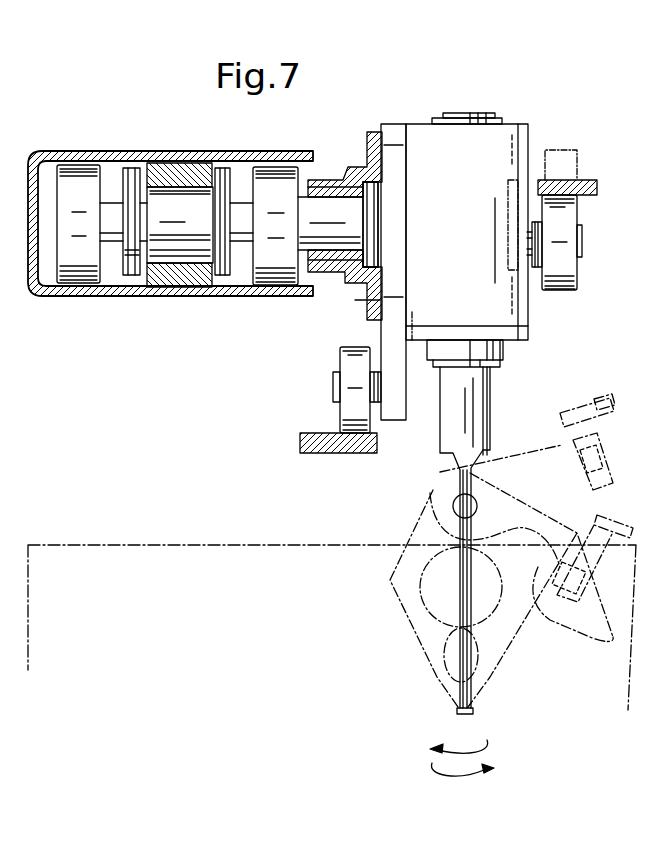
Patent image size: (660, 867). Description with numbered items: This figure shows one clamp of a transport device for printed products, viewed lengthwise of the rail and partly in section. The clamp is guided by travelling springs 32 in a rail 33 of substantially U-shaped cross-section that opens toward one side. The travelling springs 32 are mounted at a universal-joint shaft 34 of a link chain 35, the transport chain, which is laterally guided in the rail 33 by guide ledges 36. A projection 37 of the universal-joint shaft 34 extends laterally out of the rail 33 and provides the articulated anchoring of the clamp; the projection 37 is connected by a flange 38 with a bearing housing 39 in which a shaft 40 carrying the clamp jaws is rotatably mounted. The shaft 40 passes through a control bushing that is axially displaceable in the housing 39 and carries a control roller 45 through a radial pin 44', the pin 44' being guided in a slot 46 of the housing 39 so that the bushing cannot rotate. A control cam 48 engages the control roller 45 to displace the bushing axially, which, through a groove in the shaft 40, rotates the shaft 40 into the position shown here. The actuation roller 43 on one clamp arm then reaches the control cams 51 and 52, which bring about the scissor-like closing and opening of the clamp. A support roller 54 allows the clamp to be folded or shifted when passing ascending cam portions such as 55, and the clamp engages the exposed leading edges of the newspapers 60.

The travelling springs 32 is at (82, 173).
The rail 33 is at (43, 151).
The universal-joint shaft 34 is at (113, 207).
The link chain 35 is at (167, 208).
The guide ledges 36 is at (183, 163).
The projection 37 is at (318, 205).
The flange 38 is at (356, 150).
The bearing housing 39 is at (513, 133).
The shaft 40 is at (481, 397).
The actuation roller 43 is at (593, 437).
The radial pin 44' is at (579, 242).
The control roller 45 is at (567, 289).
The slot 46 is at (508, 187).
The control cam 48 is at (590, 180).
The control cam 51 is at (598, 400).
The control cam 52 is at (587, 617).
The support roller 54 is at (343, 357).
The ascending portion of control cam 55 is at (343, 453).
The newspapers 60 is at (175, 542).